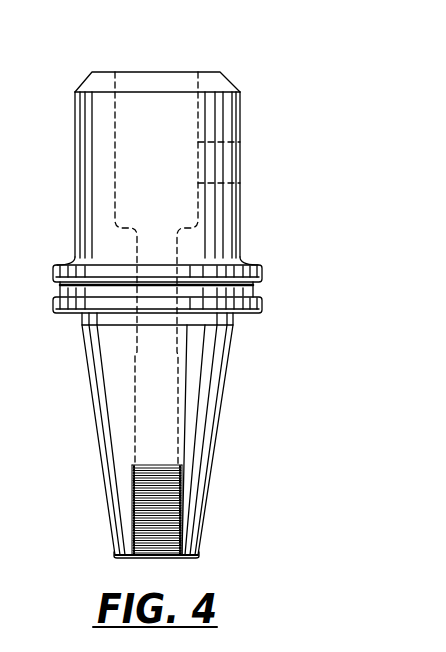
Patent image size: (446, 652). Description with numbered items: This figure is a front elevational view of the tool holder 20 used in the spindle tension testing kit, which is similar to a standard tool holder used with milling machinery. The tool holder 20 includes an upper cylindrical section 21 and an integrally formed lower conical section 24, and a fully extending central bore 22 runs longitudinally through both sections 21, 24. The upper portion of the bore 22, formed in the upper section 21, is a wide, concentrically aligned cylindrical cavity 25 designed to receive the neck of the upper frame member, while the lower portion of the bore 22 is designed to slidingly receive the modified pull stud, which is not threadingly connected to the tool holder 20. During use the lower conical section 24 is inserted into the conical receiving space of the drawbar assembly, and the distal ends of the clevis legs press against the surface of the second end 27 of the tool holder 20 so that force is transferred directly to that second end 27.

The tool holder 20 is at (161, 280).
The upper cylindrical section 21 is at (95, 155).
The central bore 22 is at (163, 247).
The lower conical section 24 is at (120, 410).
The cylindrical cavity 25 is at (167, 138).
The second end 27 is at (132, 72).